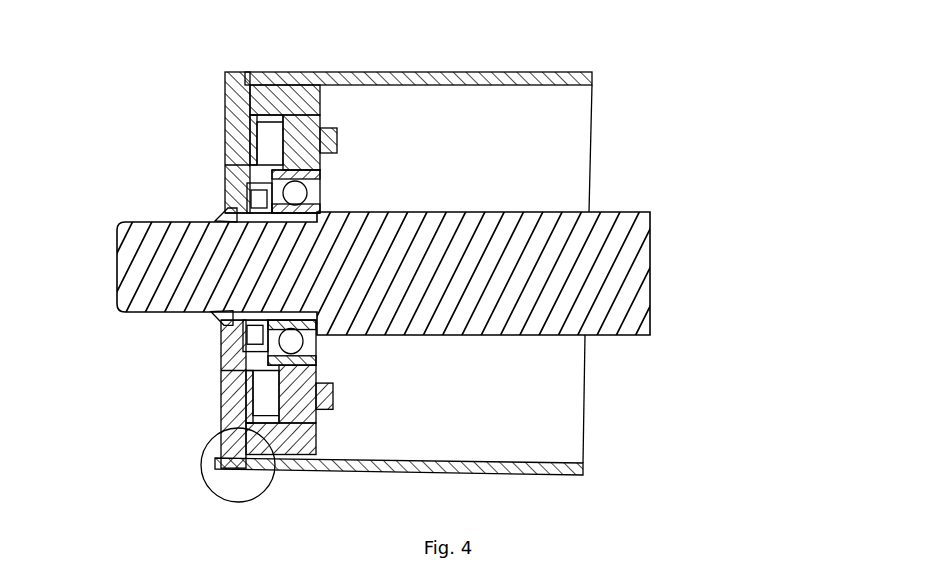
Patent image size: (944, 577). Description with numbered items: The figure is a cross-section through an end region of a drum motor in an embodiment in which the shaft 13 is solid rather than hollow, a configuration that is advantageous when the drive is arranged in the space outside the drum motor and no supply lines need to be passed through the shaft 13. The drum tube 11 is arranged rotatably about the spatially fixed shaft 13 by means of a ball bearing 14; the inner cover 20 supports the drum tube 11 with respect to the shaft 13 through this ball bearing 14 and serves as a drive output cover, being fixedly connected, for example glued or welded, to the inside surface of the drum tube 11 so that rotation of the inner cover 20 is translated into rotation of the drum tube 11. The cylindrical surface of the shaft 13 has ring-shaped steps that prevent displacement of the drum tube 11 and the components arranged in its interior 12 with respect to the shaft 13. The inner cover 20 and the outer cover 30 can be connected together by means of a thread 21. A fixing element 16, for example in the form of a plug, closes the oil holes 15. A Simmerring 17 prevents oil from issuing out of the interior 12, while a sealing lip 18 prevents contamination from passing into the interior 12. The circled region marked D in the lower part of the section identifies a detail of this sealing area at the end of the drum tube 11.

The drum tube 11 is at (327, 78).
The interior 12 is at (410, 105).
The shaft 13 is at (148, 262).
The ball bearing 14 is at (228, 163).
The oil holes 15 is at (215, 410).
The fixing element 16 is at (300, 455).
The Simmerring 17 is at (222, 342).
The sealing lip 18 is at (228, 200).
The inner cover 20 is at (277, 92).
The thread 21 is at (222, 393).
The outer cover 30 is at (225, 100).
The detail region D is at (231, 462).